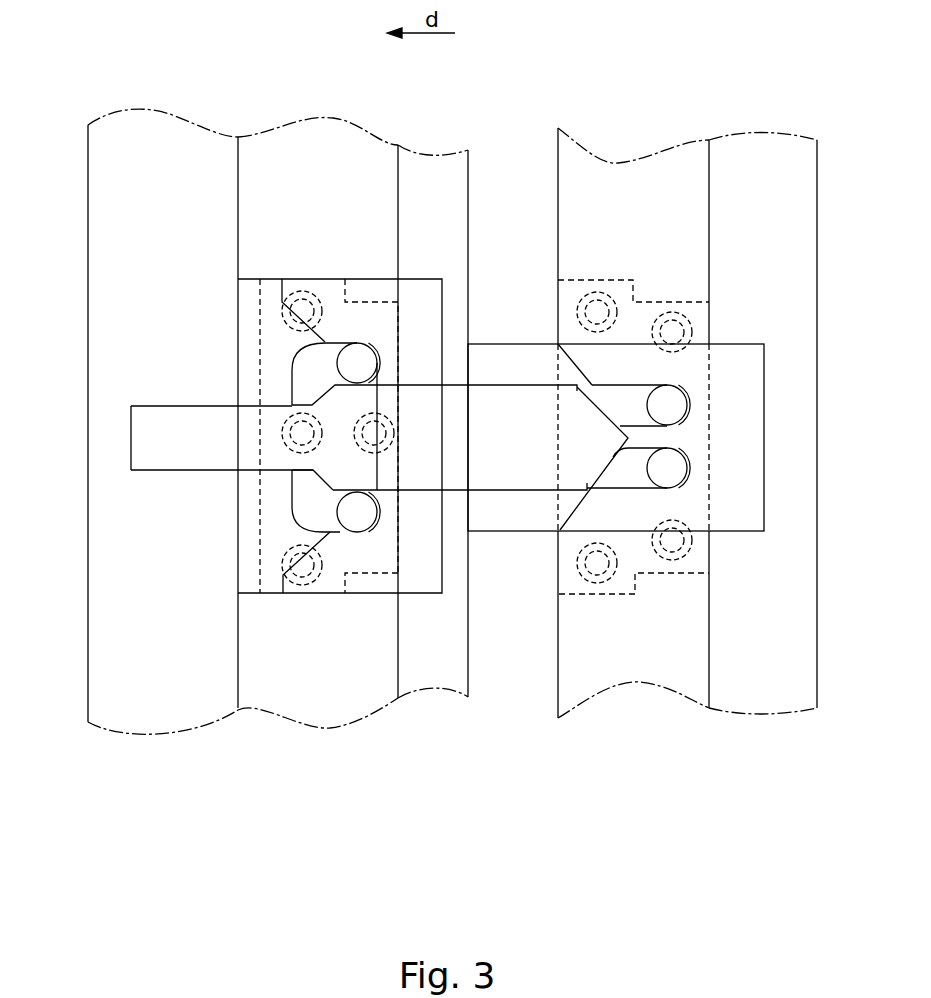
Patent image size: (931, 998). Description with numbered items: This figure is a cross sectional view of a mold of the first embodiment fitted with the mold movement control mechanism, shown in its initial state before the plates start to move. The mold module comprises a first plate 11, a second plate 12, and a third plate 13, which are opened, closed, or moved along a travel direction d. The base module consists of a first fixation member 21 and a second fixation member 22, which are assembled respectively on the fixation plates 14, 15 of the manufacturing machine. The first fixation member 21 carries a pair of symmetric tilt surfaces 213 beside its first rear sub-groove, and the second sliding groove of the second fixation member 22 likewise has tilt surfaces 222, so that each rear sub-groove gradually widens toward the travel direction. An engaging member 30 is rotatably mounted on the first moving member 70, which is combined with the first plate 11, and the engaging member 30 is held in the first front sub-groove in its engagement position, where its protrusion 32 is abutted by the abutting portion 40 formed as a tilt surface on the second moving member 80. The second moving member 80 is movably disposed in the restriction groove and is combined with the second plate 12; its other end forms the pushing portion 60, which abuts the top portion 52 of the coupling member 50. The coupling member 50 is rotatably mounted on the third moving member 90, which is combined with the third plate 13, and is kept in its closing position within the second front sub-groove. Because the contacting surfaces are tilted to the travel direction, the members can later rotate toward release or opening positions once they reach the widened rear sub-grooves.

The first plate 11 is at (305, 153).
The second plate 12 is at (137, 150).
The third plate 13 is at (607, 180).
The fixation plate 14 is at (435, 180).
The fixation plate 15 is at (768, 155).
The first fixation member 21 is at (438, 568).
The second fixation member 22 is at (733, 533).
The tilt surface 213 is at (315, 540).
The tilt surface 222 is at (565, 506).
The engaging member 30 is at (353, 512).
The protrusion 32 is at (303, 483).
The abutting portion 40 is at (330, 476).
The coupling member 50 is at (667, 465).
The top portion 52 is at (613, 472).
The pushing portion 60 is at (595, 460).
The first moving member 70 is at (373, 575).
The second moving member 80 is at (523, 423).
The third moving member 90 is at (577, 594).